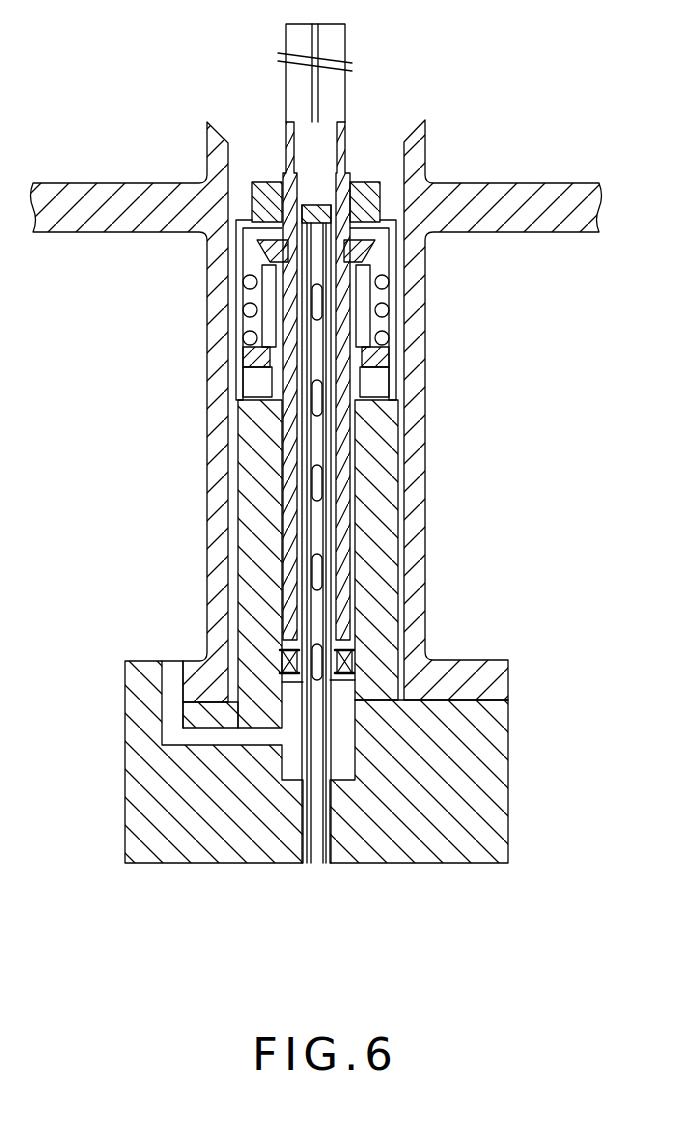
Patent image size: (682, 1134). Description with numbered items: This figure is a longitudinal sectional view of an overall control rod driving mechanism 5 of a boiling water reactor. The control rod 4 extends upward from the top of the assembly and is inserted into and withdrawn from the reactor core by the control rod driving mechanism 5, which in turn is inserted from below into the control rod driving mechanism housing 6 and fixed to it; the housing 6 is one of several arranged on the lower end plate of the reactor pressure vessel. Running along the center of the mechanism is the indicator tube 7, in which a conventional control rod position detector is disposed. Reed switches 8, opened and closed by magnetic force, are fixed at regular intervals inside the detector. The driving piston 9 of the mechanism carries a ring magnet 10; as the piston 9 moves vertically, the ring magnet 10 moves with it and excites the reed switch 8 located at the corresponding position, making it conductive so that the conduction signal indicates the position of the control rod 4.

The control rod 4 is at (337, 43).
The control rod driving mechanism 5 is at (250, 567).
The control rod driving mechanism housing 6 is at (222, 430).
The indicator tube 7 is at (337, 508).
The reed switch 8 is at (320, 573).
The driving piston 9 is at (342, 625).
The ring magnet 10 is at (357, 660).